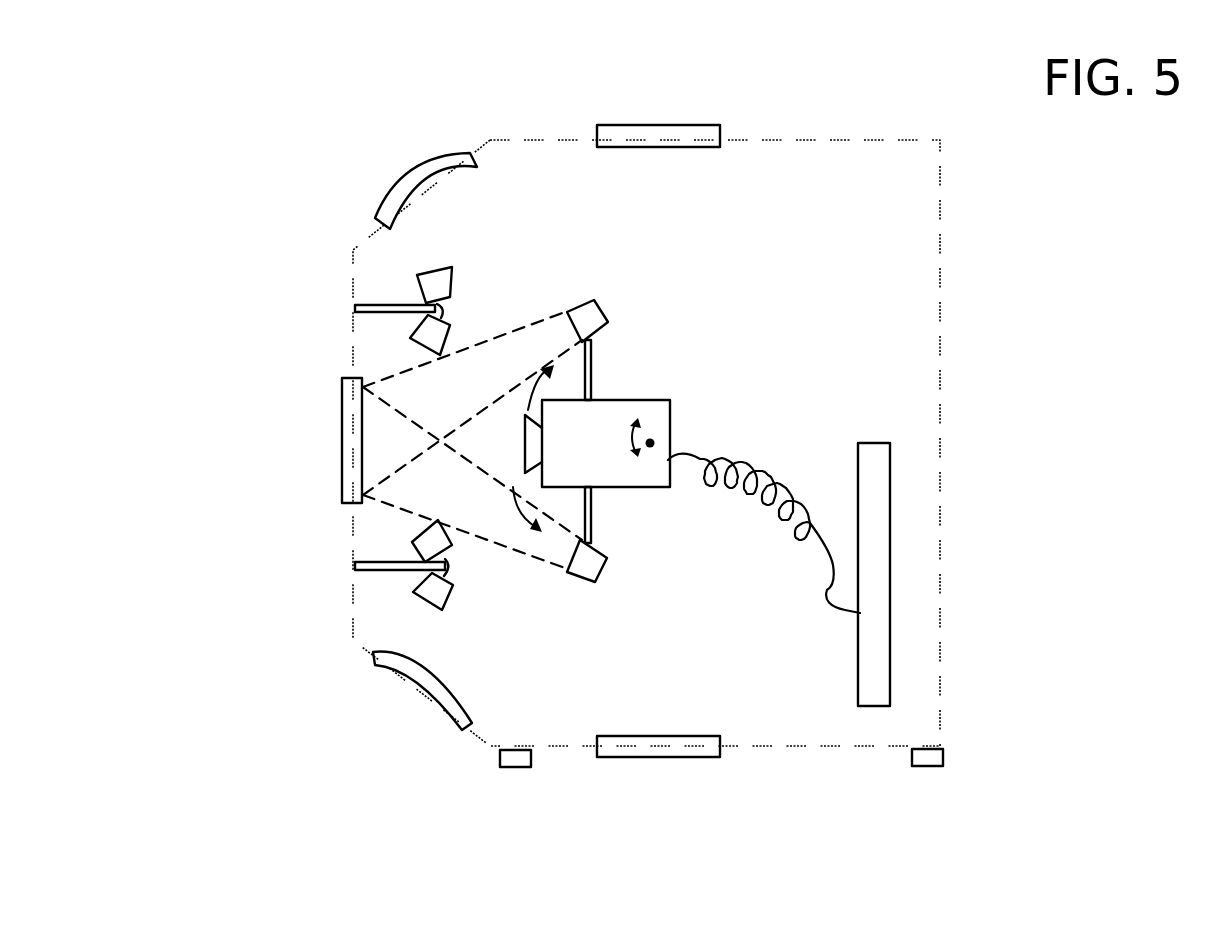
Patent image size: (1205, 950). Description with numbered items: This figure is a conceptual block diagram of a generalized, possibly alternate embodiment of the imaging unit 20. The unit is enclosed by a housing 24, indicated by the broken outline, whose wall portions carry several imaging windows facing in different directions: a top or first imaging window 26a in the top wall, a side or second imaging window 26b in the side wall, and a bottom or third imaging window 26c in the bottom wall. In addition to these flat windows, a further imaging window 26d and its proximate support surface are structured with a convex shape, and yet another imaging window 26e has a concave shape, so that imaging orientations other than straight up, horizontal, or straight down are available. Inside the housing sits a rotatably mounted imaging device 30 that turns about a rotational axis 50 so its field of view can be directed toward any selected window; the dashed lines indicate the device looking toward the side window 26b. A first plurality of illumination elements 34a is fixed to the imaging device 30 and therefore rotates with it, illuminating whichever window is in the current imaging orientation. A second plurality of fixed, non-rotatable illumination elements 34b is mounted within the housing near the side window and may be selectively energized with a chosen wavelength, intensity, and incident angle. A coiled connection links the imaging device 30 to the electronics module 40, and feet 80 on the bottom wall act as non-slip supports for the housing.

The imaging unit 20 is at (300, 714).
The housing 24 is at (352, 277).
The top or first imaging window 26a is at (663, 130).
The side or second imaging window 26b is at (352, 452).
The bottom or third imaging window 26c is at (691, 738).
The convex imaging window 26d is at (412, 175).
The concave imaging window 26e is at (425, 682).
The imaging device 30 is at (622, 408).
The imaging device mounted illumination source 34a is at (598, 308).
The housing mounted illumination source 34b is at (446, 282).
The electronics module 40 is at (867, 662).
The rotational axis 50 is at (652, 443).
The feet 80 is at (514, 767).